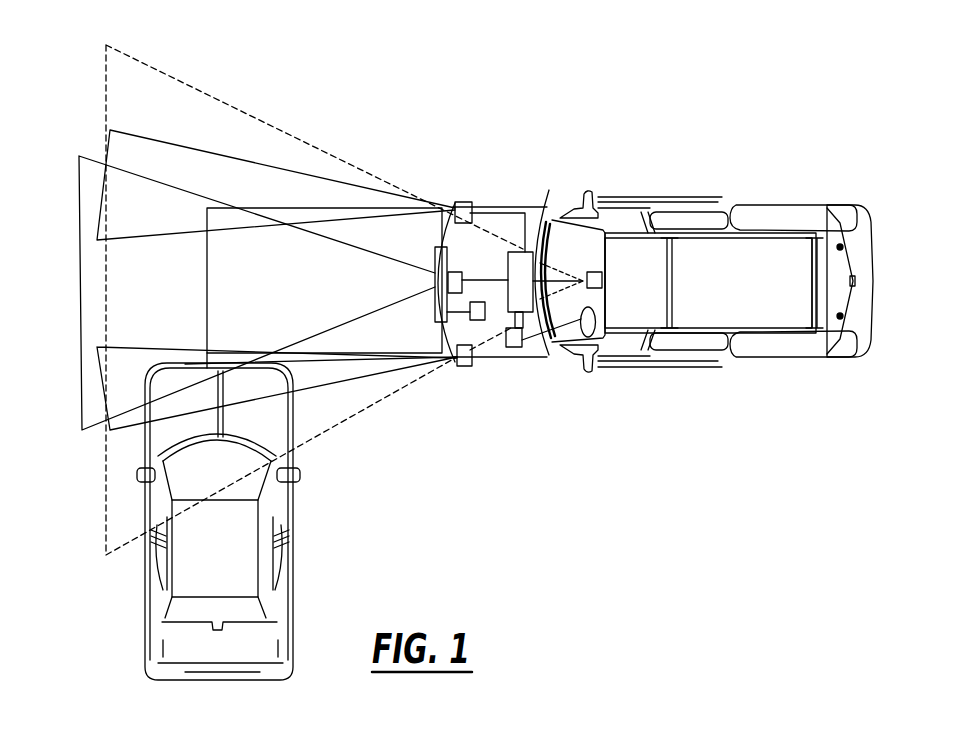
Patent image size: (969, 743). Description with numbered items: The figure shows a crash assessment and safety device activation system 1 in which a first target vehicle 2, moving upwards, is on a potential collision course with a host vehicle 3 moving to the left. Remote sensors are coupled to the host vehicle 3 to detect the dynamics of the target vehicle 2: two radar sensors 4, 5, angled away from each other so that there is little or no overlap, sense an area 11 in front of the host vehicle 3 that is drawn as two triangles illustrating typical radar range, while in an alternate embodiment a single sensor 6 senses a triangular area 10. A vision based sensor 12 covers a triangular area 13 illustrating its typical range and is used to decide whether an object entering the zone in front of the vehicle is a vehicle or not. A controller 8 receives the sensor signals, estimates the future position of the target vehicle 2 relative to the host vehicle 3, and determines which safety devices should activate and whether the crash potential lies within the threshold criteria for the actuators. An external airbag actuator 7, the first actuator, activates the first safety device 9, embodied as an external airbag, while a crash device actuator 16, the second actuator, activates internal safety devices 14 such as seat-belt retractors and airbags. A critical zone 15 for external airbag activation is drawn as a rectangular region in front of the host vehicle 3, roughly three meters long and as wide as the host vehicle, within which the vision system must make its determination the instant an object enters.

The crash assessment and safety device activation system 1 is at (512, 141).
The first target vehicle 2 is at (293, 532).
The host vehicle 3 is at (745, 360).
The radar sensor 4 is at (462, 202).
The radar sensor 5 is at (465, 367).
The sensor 6 is at (456, 272).
The external airbag actuator 7 is at (479, 302).
The controller 8 is at (535, 250).
The first safety device 9 is at (434, 255).
The triangular area 10 is at (79, 157).
The area sensed by the radar sensors 11 is at (193, 149).
The vision based sensor 12 is at (602, 280).
The area sensed by the vision sensor 13 is at (305, 139).
The internal safety devices 14 is at (596, 320).
The critical zone 15 is at (207, 277).
The crash device actuator 16 is at (520, 348).